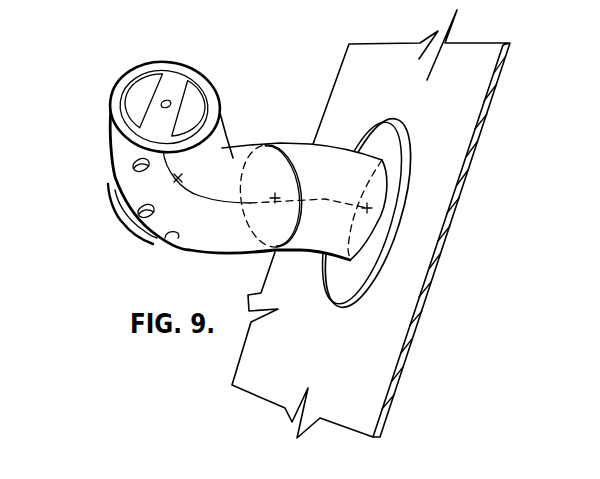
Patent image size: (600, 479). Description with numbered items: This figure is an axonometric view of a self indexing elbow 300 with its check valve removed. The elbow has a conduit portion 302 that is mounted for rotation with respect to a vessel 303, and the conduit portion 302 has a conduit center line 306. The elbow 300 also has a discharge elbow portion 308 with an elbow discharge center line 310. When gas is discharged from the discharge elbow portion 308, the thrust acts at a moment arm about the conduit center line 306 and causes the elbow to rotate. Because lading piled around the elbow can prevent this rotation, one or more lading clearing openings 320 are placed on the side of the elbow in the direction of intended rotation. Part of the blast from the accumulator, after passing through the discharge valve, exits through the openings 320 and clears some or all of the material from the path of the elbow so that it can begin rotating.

The self indexing elbow 300 is at (255, 82).
The conduit portion 302 is at (305, 153).
The vessel 303 is at (377, 378).
The conduit center line 306 is at (339, 206).
The discharge elbow portion 308 is at (114, 140).
The elbow discharge center line 310 is at (168, 92).
The lading clearing openings 320 is at (137, 170).